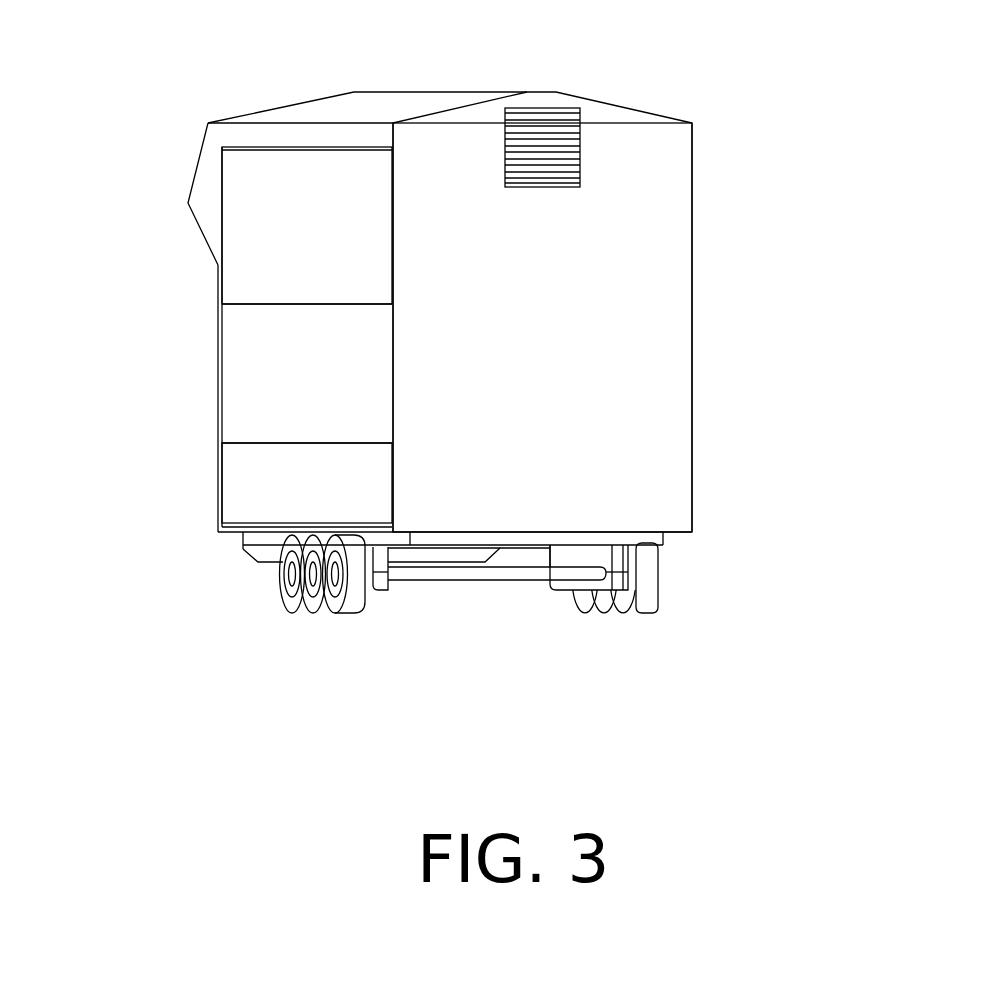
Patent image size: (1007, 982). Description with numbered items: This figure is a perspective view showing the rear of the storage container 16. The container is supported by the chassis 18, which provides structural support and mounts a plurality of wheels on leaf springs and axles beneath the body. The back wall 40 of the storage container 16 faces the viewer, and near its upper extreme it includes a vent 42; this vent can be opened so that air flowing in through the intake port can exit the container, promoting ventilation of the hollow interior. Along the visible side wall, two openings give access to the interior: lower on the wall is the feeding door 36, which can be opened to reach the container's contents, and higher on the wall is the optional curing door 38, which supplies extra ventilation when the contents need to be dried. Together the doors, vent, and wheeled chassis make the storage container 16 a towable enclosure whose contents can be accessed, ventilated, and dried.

The storage container 16 is at (528, 360).
The chassis 18 is at (615, 613).
The feeding door 36 is at (315, 488).
The curing door 38 is at (317, 235).
The back wall 40 is at (592, 425).
The vent 42 is at (547, 130).